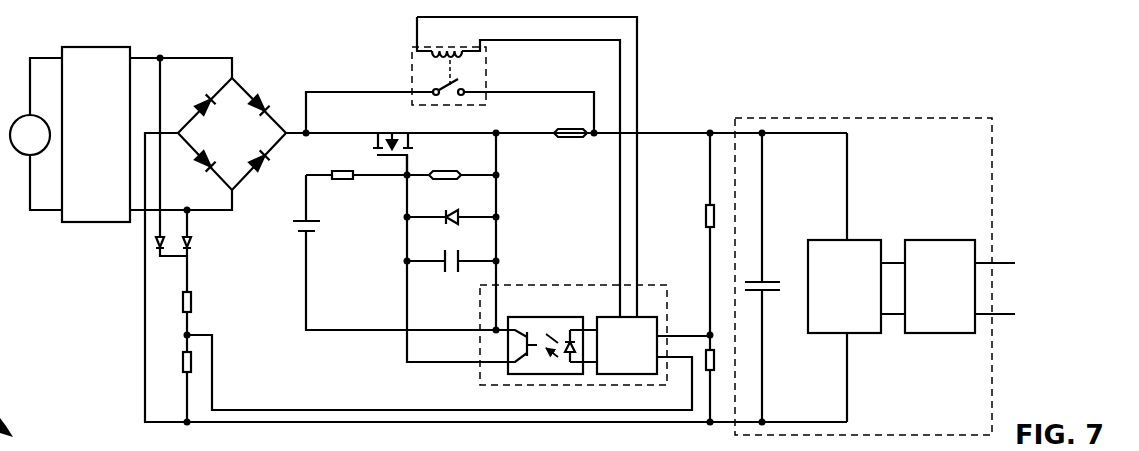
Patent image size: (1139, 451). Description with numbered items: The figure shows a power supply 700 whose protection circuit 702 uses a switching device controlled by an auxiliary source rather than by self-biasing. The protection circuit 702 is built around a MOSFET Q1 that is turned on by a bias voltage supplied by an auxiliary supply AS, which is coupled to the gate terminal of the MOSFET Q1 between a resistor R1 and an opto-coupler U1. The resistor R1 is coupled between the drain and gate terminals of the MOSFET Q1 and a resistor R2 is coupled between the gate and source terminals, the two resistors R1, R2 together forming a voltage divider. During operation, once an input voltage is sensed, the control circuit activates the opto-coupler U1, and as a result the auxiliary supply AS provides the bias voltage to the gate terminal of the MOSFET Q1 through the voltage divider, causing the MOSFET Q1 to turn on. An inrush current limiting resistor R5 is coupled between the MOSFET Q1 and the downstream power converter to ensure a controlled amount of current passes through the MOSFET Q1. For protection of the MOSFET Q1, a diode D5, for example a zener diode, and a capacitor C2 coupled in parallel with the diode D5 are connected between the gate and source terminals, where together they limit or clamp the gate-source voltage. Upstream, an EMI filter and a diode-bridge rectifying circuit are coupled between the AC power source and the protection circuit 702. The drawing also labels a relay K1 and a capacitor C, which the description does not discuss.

The power supply 700 is at (1030, 48).
The protection circuit 702 is at (522, 208).
The relay K1 is at (471, 167).
The MOSFET Q1 is at (390, 139).
The resistor R1 is at (356, 161).
The resistor R2 is at (451, 161).
The resistor R5 is at (603, 120).
The diode D5 is at (451, 205).
The capacitor C2 is at (451, 251).
The bulk capacitor C is at (766, 277).
The auxiliary supply AS is at (400, 252).
The opto-coupler U1 is at (573, 335).